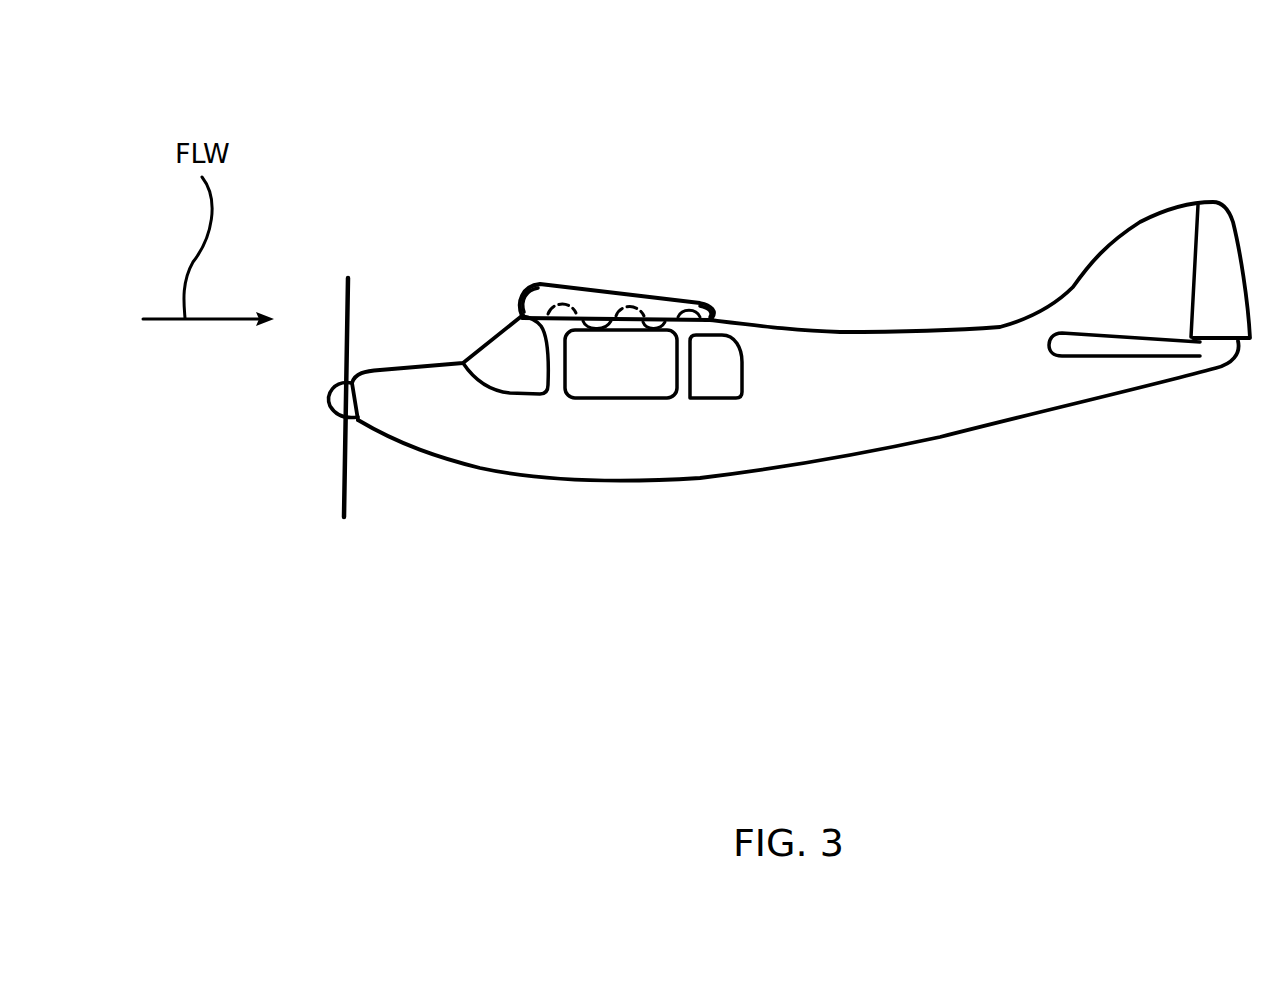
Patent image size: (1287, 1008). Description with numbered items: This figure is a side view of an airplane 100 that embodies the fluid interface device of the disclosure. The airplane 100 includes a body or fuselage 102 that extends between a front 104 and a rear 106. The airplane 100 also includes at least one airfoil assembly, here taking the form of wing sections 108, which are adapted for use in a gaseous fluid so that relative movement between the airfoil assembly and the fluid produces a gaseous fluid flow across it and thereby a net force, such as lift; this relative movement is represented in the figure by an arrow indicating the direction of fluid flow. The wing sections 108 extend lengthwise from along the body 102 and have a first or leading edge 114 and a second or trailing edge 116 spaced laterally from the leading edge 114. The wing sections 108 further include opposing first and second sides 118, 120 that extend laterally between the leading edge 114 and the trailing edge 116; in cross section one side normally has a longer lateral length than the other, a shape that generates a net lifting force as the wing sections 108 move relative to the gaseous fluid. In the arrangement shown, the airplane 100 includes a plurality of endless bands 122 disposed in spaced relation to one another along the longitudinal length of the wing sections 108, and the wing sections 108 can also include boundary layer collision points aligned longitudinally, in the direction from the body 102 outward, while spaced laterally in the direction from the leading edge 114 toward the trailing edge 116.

The airplane 100 is at (863, 133).
The fuselage 102 is at (849, 420).
The front 104 is at (430, 489).
The rear 106 is at (1190, 453).
The wing section 108 is at (598, 296).
The leading edge 114 is at (518, 295).
The trailing edge 116 is at (722, 312).
The first side 118 is at (658, 297).
The second side 120 is at (620, 322).
The endless band 122 is at (587, 332).